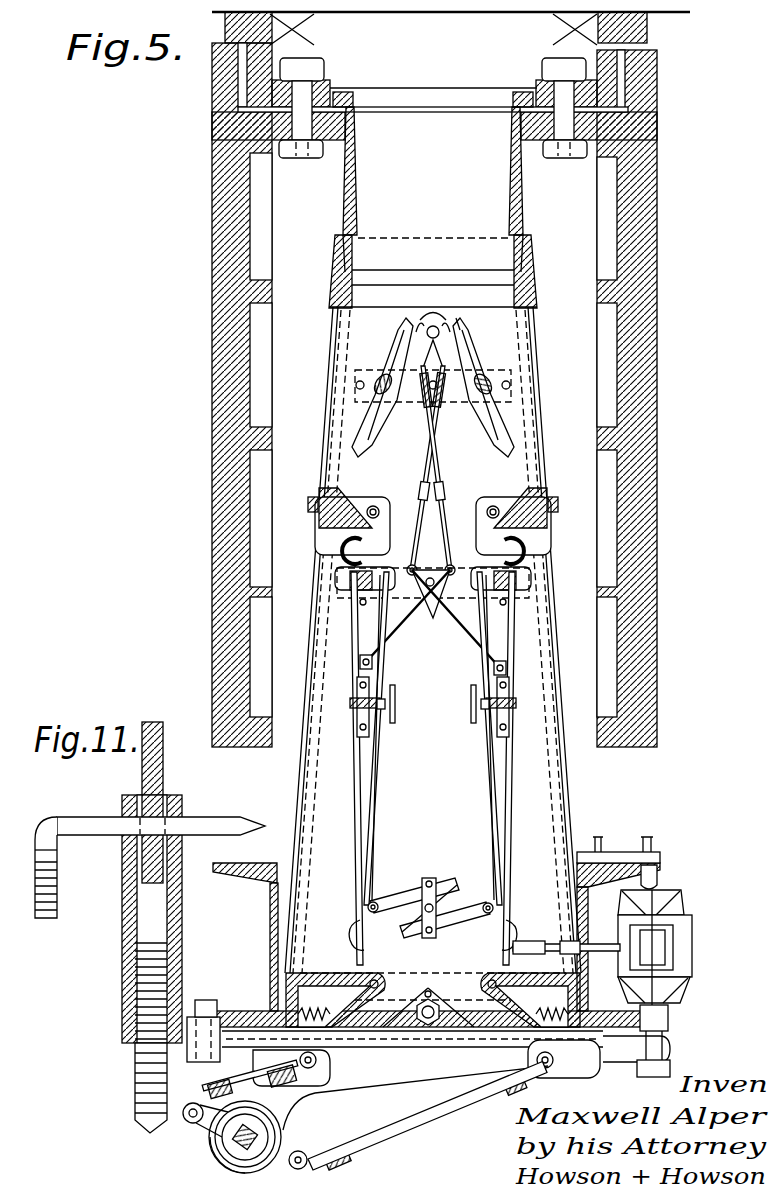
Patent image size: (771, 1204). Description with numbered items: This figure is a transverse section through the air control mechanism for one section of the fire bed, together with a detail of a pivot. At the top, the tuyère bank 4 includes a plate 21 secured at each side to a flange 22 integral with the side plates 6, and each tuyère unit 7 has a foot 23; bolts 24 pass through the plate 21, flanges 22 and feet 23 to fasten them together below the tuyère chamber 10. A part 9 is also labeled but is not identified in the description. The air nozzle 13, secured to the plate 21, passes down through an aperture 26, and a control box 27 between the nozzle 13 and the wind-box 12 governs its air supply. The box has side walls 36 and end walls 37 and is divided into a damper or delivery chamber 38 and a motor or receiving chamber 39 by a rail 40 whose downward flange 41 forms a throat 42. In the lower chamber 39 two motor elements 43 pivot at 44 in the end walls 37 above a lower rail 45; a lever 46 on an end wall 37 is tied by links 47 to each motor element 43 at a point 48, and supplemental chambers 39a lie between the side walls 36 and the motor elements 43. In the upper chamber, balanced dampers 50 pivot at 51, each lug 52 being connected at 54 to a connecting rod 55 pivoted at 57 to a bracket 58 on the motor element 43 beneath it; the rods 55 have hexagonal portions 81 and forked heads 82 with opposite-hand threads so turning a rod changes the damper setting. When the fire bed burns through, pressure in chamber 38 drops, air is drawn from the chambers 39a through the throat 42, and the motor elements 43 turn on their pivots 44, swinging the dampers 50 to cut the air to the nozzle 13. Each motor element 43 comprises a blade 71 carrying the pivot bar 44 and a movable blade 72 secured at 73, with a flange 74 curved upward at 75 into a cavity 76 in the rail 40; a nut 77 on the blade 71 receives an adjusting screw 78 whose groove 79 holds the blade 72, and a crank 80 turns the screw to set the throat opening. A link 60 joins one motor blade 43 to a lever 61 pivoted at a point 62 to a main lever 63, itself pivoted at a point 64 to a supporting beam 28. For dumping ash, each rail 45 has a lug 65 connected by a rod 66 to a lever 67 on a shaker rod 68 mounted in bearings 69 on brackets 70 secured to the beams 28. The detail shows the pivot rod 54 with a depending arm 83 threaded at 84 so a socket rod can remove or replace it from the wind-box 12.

In FIG. 5, the tuyère bank 4 is at (430, 395).
In FIG. 5, the side plates 6 is at (225, 364).
In FIG. 5, the tuyère unit 7 is at (300, 40).
In FIG. 5, the top plate 9 is at (435, 24).
In FIG. 5, the tuyère chamber 10 is at (433, 71).
In FIG. 5, the wind-box 12 is at (418, 1116).
In FIG. 5, the air nozzle 13 is at (433, 207).
In FIG. 5, the plate 21 is at (240, 109).
In FIG. 5, the flange 22 is at (240, 120).
In FIG. 5, the foot 23 is at (332, 92).
In FIG. 5, the bolts 24 is at (312, 66).
In FIG. 5, the aperture 26 is at (358, 125).
In FIG. 5, the control box 27 is at (316, 612).
In FIG. 5, the supporting beams 28 is at (580, 905).
In FIG. 5, the side walls 36 is at (300, 788).
In FIG. 5, the end walls 37 is at (386, 1040).
In FIG. 5, the damper or delivery chamber 38 is at (463, 464).
In FIG. 5, the motor or receiving chamber 39 is at (431, 824).
In FIG. 5, the supplemental chamber 39a is at (352, 836).
In FIG. 5, the rail 40 is at (337, 520).
In FIG. 5, the downwardly extending flange 41 is at (435, 557).
In FIG. 5, the throat 42 is at (433, 526).
In FIG. 5, the motor elements 43 is at (378, 782).
In FIG. 5, the pivots 44 is at (350, 575).
In FIG. 5, the lower rail 45 is at (318, 975).
In FIG. 5, the lever 46 is at (455, 890).
In FIG. 5, the links 47 is at (407, 896).
In FIG. 5, the pivot point 48 is at (366, 907).
In FIG. 5, the balanced dampers 50 is at (395, 350).
In FIG. 5, the pivots 51 is at (372, 384).
In FIG. 5, the lug 52 is at (433, 338).
In FIG. 11, the lug 52 is at (163, 772).
In FIG. 5, the pivot rod 54 is at (417, 406).
In FIG. 11, the pivot rod 54 is at (216, 826).
In FIG. 5, the connecting rod 55 is at (430, 430).
In FIG. 11, the connecting rod 55 is at (135, 1078).
In FIG. 5, the pivot 57 is at (433, 618).
In FIG. 5, the bracket 58 is at (388, 640).
In FIG. 5, the link 60 is at (616, 952).
In FIG. 5, the lever 61 is at (665, 946).
In FIG. 5, the pivot point 62 is at (665, 926).
In FIG. 5, the main lever 63 is at (672, 893).
In FIG. 5, the pivot point 64 is at (660, 884).
In FIG. 5, the lug 65 is at (328, 1060).
In FIG. 5, the rod 66 is at (244, 1080).
In FIG. 5, the lever 67 is at (196, 1124).
In FIG. 5, the shaker rod 68 is at (262, 1131).
In FIG. 5, the bearings 69 is at (224, 1165).
In FIG. 5, the brackets 70 is at (404, 1082).
In FIG. 5, the blade 71 is at (354, 774).
In FIG. 5, the movable blade 72 is at (382, 754).
In FIG. 5, the securing point 73 is at (352, 930).
In FIG. 5, the flange 74 is at (432, 559).
In FIG. 5, the curved portion 75 is at (343, 551).
In FIG. 5, the cavity 76 is at (375, 506).
In FIG. 5, the nut 77 is at (370, 680).
In FIG. 5, the adjusting screw 78 is at (350, 703).
In FIG. 5, the groove 79 is at (396, 700).
In FIG. 5, the crank 80 is at (386, 710).
In FIG. 5, the hexagonal portions 81 is at (419, 491).
In FIG. 5, the forked heads 82 is at (433, 548).
In FIG. 11, the forked heads 82 is at (122, 920).
In FIG. 5, the depending arm 83 is at (463, 332).
In FIG. 11, the depending arm 83 is at (50, 852).
In FIG. 11, the threaded portion 84 is at (54, 882).